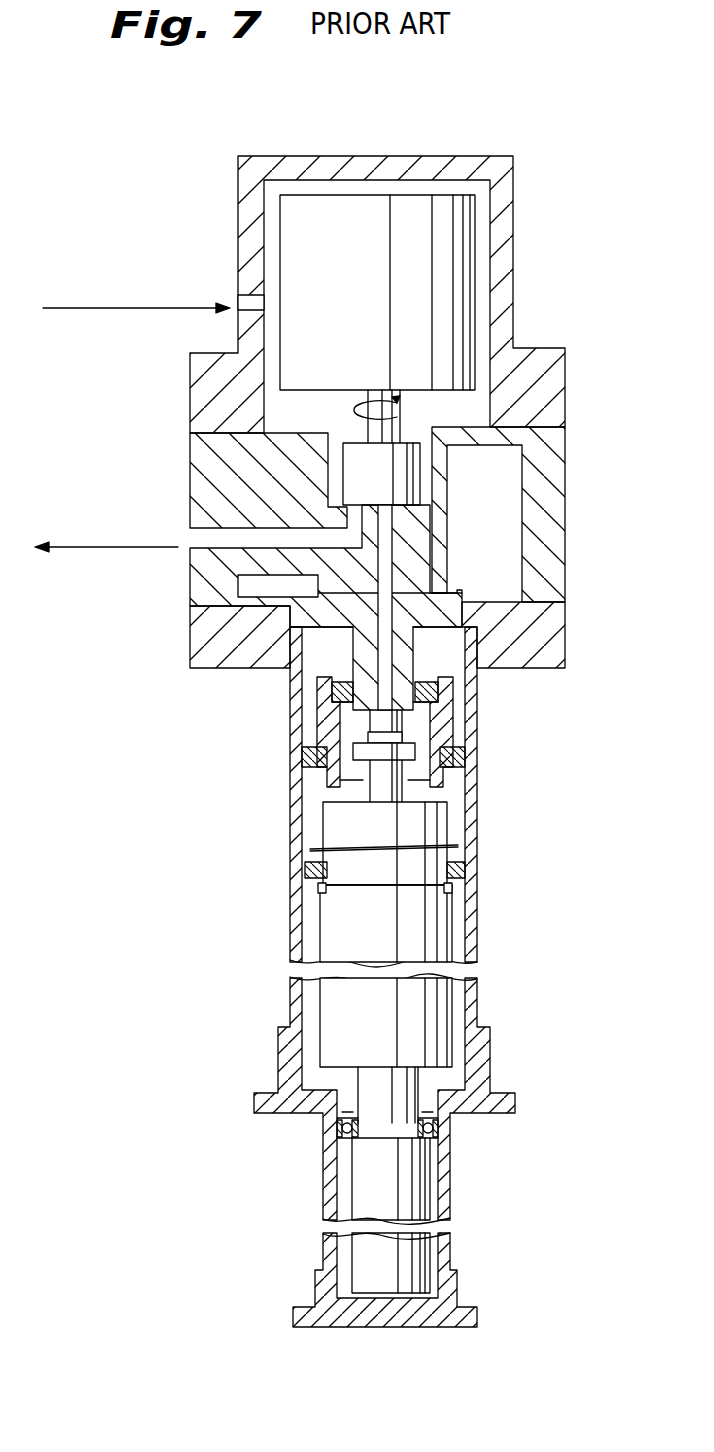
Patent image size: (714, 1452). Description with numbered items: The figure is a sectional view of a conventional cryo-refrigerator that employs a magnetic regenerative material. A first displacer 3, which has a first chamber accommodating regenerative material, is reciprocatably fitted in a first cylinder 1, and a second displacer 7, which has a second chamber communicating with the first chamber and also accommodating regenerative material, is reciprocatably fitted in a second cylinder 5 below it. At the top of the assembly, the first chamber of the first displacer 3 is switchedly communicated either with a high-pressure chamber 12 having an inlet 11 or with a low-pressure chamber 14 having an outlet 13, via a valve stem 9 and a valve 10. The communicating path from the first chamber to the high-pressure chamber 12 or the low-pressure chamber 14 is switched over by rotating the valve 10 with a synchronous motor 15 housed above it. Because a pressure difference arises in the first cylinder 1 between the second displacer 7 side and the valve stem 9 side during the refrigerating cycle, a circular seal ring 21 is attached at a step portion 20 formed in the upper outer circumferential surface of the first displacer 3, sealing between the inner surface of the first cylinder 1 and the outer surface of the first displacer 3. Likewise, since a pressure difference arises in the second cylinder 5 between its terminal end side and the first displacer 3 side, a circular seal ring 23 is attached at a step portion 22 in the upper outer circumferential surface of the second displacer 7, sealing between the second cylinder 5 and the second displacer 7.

The first cylinder 1 is at (478, 772).
The first displacer 3 is at (435, 940).
The second cylinder 5 is at (328, 1252).
The second displacer 7 is at (413, 1190).
The valve stem 9 is at (290, 617).
The valve 10 is at (395, 443).
The inlet 11 is at (240, 300).
The high-pressure chamber 12 is at (275, 343).
The outlet 13 is at (190, 535).
The low-pressure chamber 14 is at (275, 540).
The synchronous motor 15 is at (462, 252).
The step portion 20 is at (320, 887).
The circular seal ring 21 is at (310, 865).
The step portion 22 is at (353, 1143).
The circular seal ring 23 is at (443, 1130).